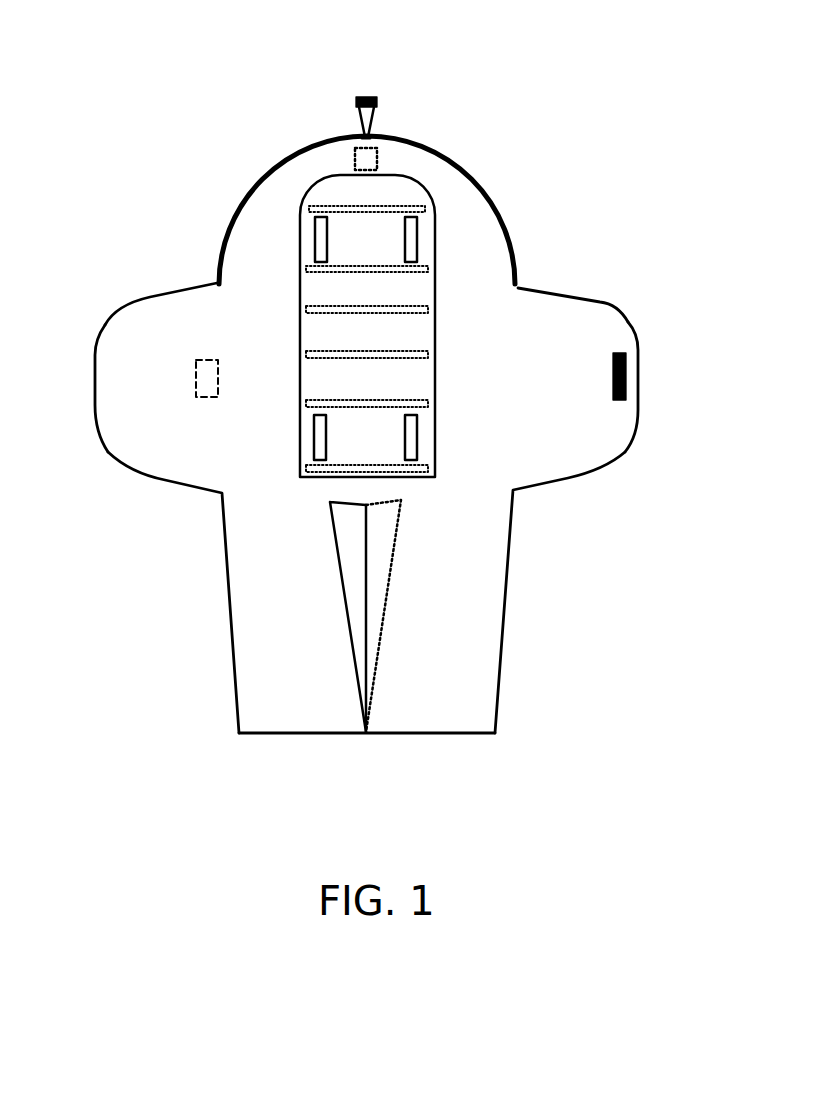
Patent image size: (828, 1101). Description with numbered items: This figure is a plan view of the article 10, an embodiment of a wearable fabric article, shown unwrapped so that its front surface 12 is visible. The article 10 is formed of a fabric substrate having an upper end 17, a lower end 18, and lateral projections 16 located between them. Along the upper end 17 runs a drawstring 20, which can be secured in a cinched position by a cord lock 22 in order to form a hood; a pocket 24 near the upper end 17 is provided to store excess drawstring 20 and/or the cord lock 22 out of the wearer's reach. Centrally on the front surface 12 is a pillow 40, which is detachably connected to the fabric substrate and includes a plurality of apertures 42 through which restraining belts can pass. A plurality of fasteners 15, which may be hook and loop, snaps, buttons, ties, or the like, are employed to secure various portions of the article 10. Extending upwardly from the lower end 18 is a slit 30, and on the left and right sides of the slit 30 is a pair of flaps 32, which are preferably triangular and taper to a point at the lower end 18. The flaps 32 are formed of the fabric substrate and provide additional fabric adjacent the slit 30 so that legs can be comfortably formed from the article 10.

The article 10 is at (163, 54).
The front surface 12 is at (132, 415).
The fastener 15 is at (206, 360).
The lateral projection 16 is at (97, 347).
The upper end 17 is at (285, 147).
The lower end 18 is at (293, 752).
The drawstring 20 is at (270, 172).
The cord lock 22 is at (364, 138).
The pocket 24 is at (378, 158).
The slit 30 is at (365, 635).
The flap 32 is at (372, 543).
The pillow 40 is at (300, 357).
The aperture 42 is at (327, 432).